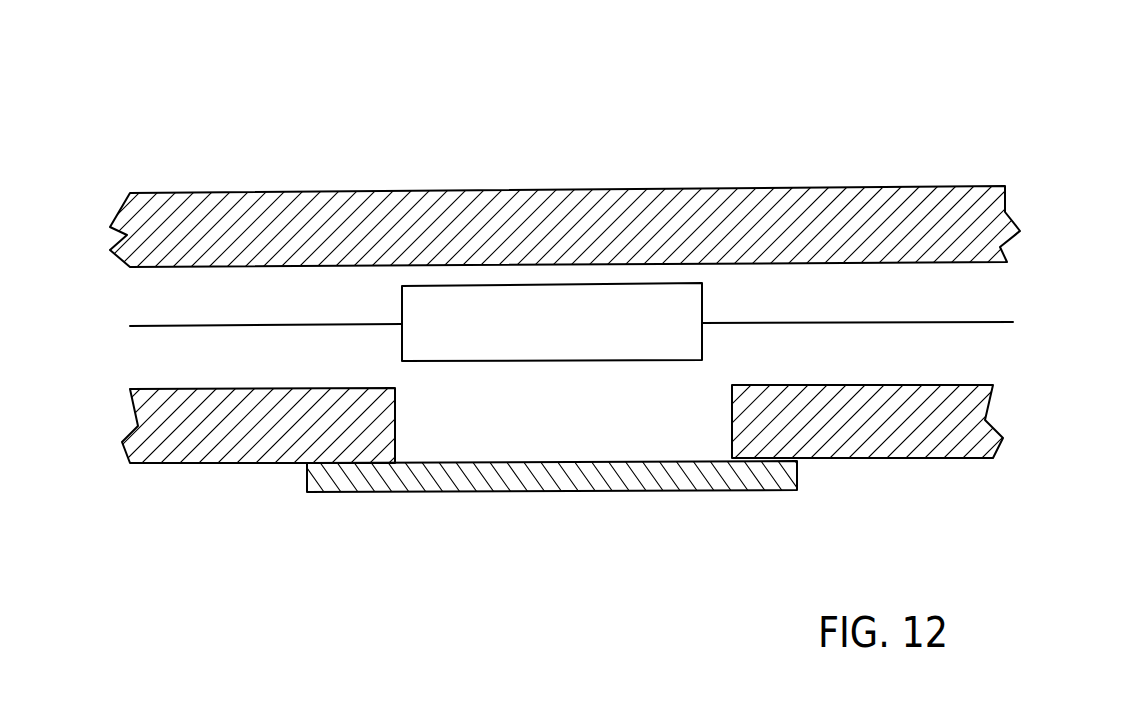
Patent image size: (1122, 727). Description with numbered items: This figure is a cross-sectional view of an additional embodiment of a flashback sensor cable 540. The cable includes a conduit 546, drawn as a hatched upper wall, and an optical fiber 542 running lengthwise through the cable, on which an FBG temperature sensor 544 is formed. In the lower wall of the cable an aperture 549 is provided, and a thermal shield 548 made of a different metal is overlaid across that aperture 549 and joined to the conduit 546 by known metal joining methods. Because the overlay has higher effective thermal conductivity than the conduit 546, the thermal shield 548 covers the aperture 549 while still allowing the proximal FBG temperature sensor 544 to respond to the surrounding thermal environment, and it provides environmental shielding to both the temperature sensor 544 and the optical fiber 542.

The flashback sensor cable 540 is at (569, 344).
The optical fiber 542 is at (985, 322).
The FBG temperature sensor 544 is at (588, 307).
The conduit 546 is at (890, 198).
The thermal shield 548 is at (575, 476).
The aperture 549 is at (400, 413).